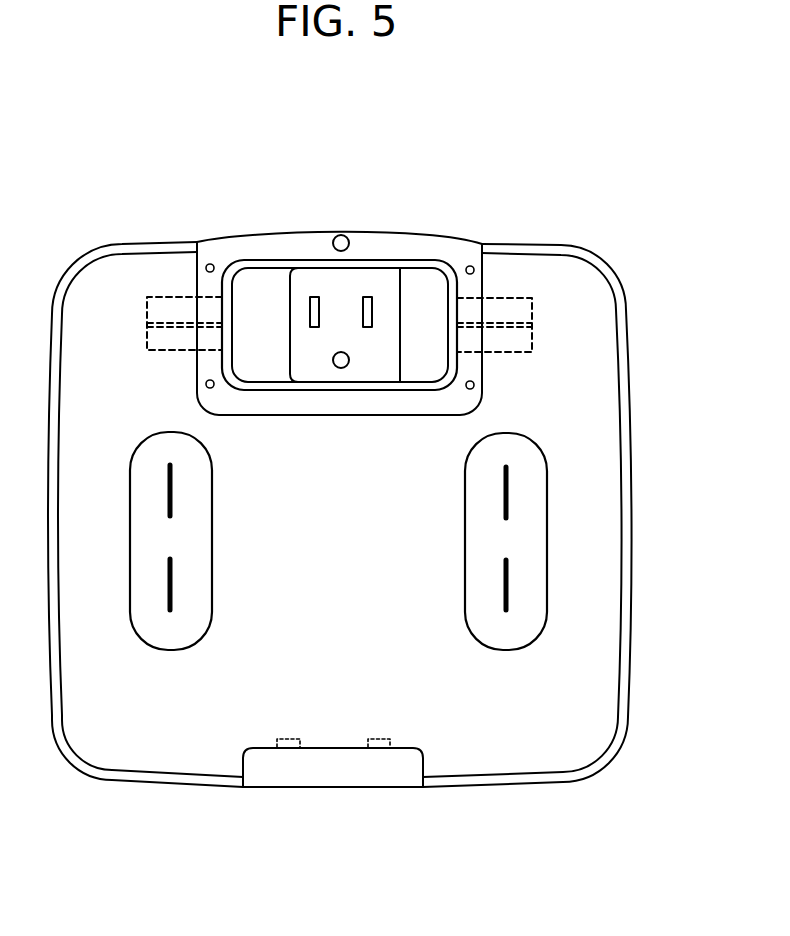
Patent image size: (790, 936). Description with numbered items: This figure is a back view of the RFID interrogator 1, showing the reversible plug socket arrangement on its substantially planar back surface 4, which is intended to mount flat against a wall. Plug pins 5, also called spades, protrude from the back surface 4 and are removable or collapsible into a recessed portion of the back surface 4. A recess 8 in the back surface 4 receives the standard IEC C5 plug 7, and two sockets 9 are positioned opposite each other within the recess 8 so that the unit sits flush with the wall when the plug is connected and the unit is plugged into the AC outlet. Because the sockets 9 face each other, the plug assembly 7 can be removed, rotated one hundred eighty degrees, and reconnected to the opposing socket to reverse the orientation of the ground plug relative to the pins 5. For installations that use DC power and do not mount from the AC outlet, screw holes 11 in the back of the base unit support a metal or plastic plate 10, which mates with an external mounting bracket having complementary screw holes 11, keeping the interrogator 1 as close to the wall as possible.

The RFID interrogator 1 is at (100, 148).
The back surface 4 is at (575, 360).
The plug pins 5 is at (367, 328).
The C5 plug 7 is at (410, 280).
The recess 8 is at (250, 297).
The sockets 9 is at (178, 297).
The plate 10 is at (226, 240).
The screw holes 11 is at (338, 235).